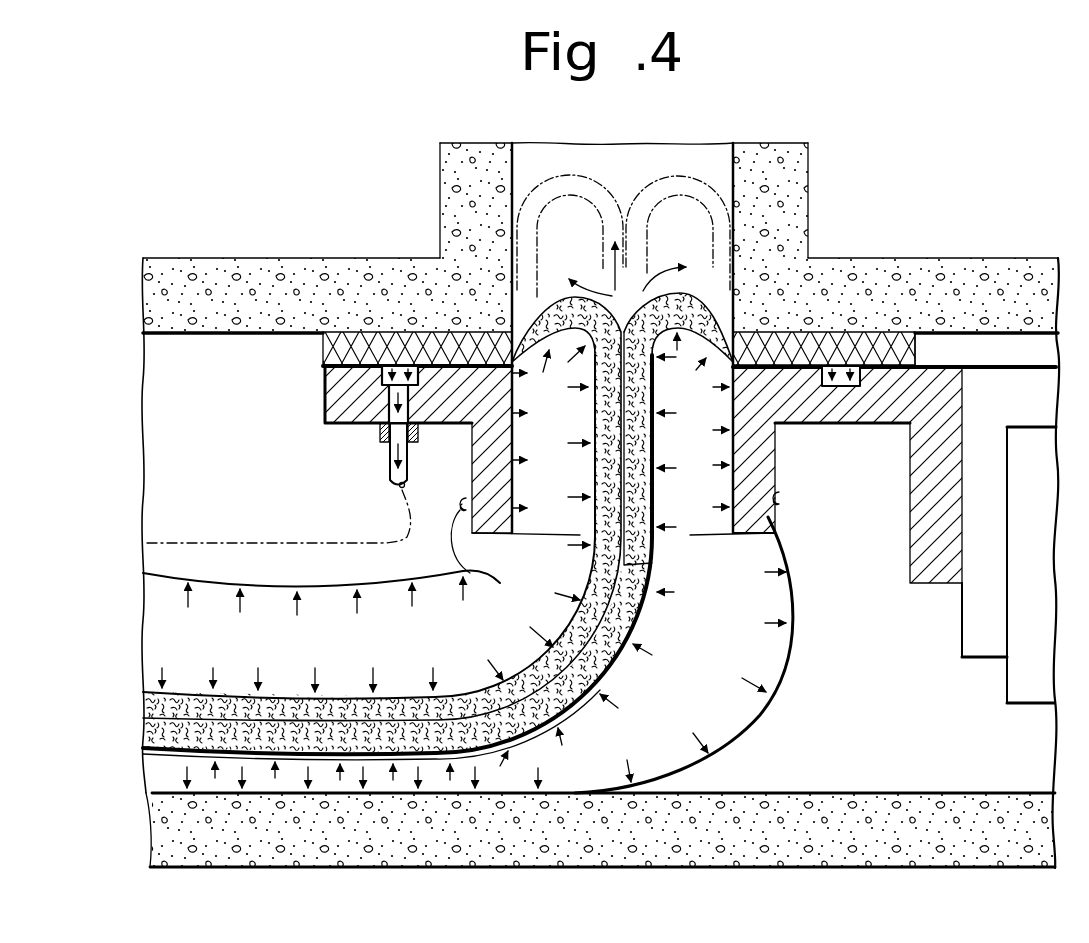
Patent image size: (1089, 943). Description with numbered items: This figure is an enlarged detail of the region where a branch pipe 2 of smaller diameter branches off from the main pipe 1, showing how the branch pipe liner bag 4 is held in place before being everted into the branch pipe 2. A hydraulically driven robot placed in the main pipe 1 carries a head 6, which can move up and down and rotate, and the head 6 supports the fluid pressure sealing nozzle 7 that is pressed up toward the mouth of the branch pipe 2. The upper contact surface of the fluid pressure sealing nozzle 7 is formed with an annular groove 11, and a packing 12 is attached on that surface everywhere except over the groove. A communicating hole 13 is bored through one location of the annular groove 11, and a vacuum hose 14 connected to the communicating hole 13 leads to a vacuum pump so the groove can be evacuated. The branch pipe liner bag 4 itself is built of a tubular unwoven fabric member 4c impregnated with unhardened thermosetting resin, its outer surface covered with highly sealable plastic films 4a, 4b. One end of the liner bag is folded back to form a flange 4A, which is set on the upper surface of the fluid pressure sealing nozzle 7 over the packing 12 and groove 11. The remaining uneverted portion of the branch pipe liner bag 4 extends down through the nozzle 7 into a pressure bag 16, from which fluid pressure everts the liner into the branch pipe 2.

The main pipe 1 is at (993, 258).
The branch pipe 2 is at (802, 200).
The flange 4A is at (880, 362).
The branch pipe liner bag 4 is at (446, 526).
The plastic film 4a is at (654, 572).
The plastic film 4b is at (643, 612).
The tubular unwoven fabric member 4c is at (419, 557).
The head 6 is at (1023, 680).
The fluid pressure sealing nozzle 7 is at (828, 430).
The annular groove 11 is at (387, 343).
The packing 12 is at (323, 367).
The communicating hole 13 is at (383, 405).
The vacuum hose 14 is at (407, 482).
The pressure bag 16 is at (740, 733).